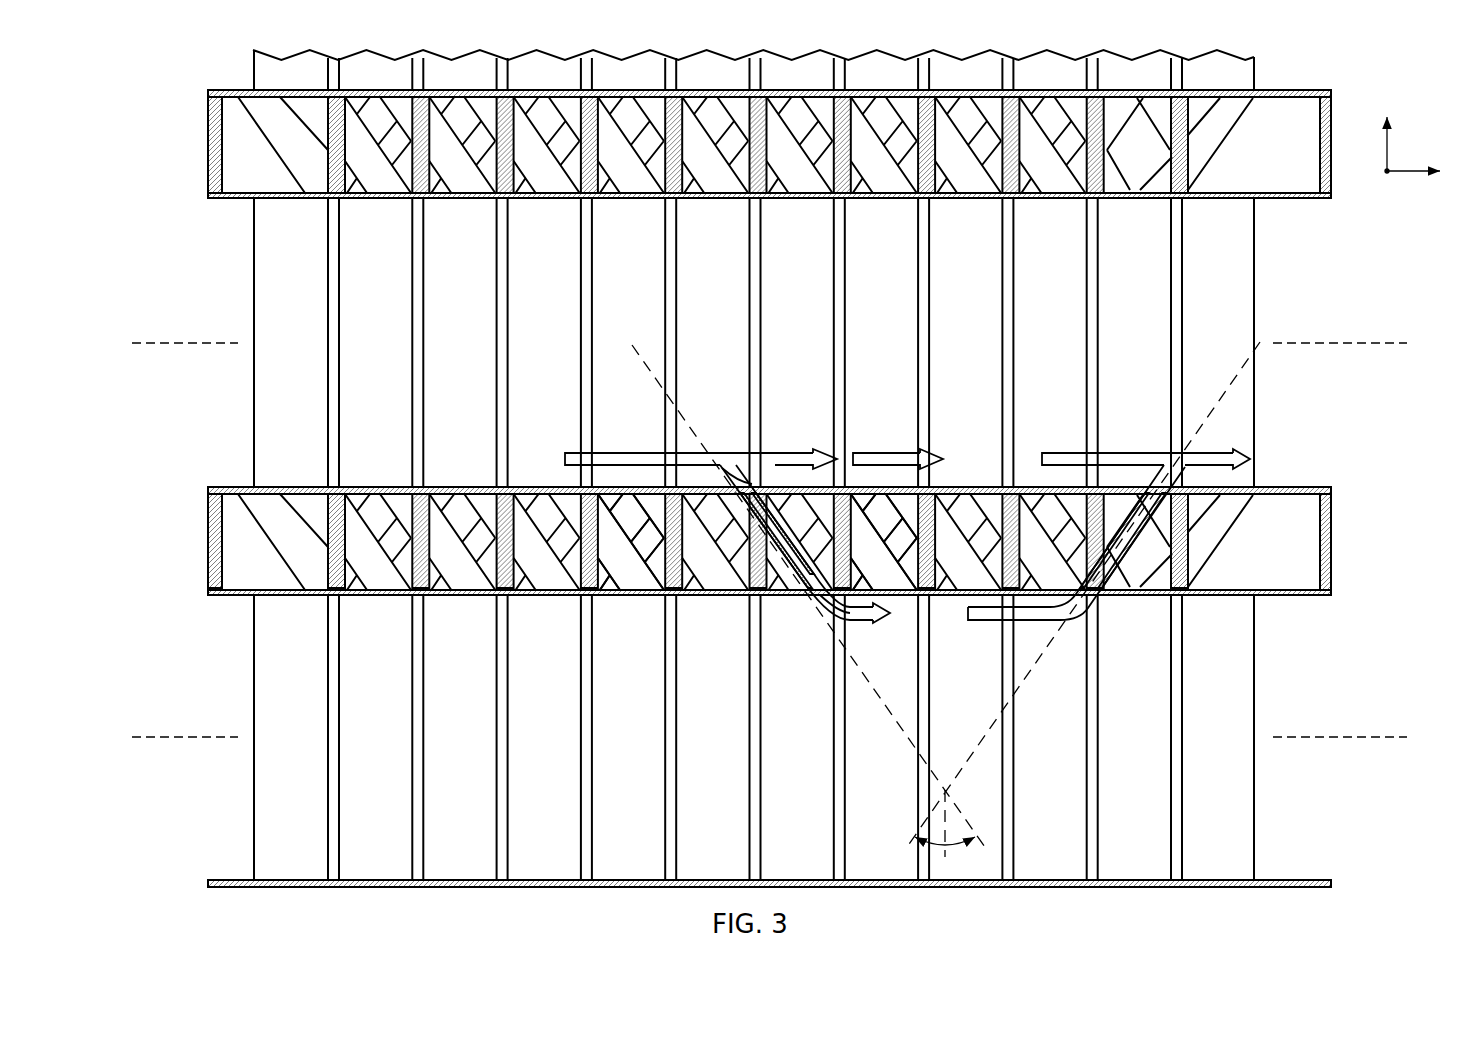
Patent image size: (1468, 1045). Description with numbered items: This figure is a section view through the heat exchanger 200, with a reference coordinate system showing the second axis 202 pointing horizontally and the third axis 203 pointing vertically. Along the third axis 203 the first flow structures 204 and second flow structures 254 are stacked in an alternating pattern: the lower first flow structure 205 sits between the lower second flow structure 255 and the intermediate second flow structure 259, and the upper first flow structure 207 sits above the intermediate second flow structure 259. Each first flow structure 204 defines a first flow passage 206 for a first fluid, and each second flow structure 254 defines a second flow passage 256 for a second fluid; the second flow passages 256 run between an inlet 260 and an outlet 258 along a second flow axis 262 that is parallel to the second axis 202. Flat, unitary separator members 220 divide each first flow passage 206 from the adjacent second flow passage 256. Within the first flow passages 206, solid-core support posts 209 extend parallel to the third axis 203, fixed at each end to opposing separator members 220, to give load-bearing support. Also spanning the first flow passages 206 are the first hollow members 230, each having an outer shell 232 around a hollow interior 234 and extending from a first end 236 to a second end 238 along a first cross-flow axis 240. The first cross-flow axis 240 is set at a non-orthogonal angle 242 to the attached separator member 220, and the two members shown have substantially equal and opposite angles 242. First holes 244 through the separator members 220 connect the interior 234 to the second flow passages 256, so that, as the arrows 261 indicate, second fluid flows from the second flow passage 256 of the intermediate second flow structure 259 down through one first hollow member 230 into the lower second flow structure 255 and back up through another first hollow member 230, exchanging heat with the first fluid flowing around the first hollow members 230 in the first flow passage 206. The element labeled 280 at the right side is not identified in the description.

The heat exchanger 200 is at (187, 92).
The second axis 202 is at (1415, 170).
The third axis 203 is at (1385, 135).
The first flow structures 204 is at (193, 145).
The lower first flow structure 205 is at (225, 572).
The first flow passages 206 is at (905, 554).
The upper first flow structure 207 is at (230, 173).
The support posts 209 is at (343, 510).
The separator members 220 is at (277, 200).
The first hollow members 230 is at (740, 537).
The outer shell 232 is at (770, 512).
The interior 234 is at (750, 500).
The first end 236 is at (697, 507).
The second end 238 is at (790, 590).
The first cross-flow axis 240 is at (797, 576).
The non-orthogonal angle 242 is at (925, 845).
The first holes 244 is at (735, 470).
The second flow structures 254 is at (211, 380).
The lower second flow structure 255 is at (375, 862).
The second flow passages 256 is at (820, 354).
The outlet 258 is at (1318, 200).
The intermediate second flow structure 259 is at (367, 355).
The inlet 260 is at (222, 200).
The arrows 261 is at (600, 448).
The second flow axis 262 is at (1357, 342).
The end stringer 280 is at (1152, 248).